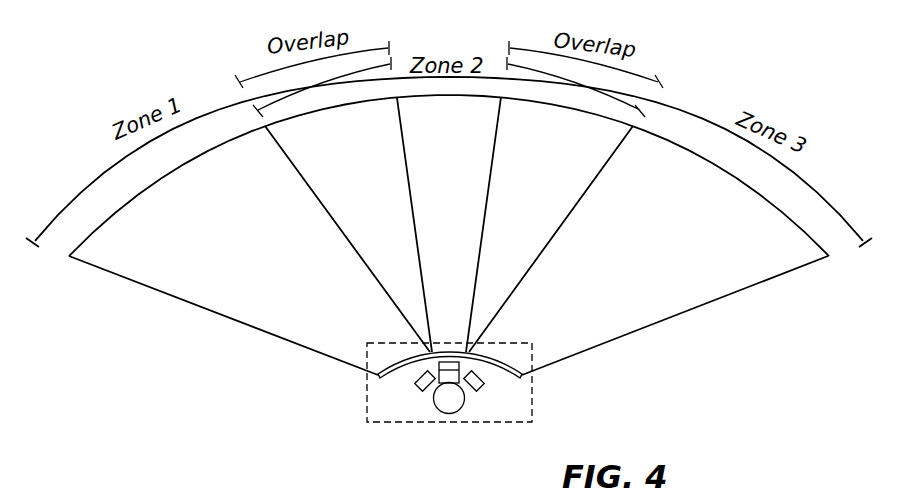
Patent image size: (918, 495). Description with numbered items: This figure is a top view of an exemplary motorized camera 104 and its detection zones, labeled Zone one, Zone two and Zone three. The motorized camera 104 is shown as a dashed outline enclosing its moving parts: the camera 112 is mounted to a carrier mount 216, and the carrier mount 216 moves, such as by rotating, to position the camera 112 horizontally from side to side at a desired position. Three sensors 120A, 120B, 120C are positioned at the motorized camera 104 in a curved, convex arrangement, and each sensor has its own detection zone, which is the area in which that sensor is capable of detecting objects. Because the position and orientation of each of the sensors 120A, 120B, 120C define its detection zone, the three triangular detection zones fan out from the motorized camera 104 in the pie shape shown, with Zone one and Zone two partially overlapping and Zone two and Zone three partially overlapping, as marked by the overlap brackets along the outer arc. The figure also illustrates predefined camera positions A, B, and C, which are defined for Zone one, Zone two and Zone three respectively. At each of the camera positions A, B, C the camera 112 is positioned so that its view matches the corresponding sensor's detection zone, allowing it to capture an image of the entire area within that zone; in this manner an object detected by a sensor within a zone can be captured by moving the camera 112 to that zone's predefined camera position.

The camera 112 is at (444, 352).
The sensor 120A is at (395, 357).
The sensor 120B is at (458, 350).
The sensor 120C is at (512, 357).
The motorized camera 104 is at (533, 397).
The carrier mount 216 is at (458, 413).
The camera position A is at (424, 386).
The camera position B is at (440, 383).
The camera position C is at (475, 386).